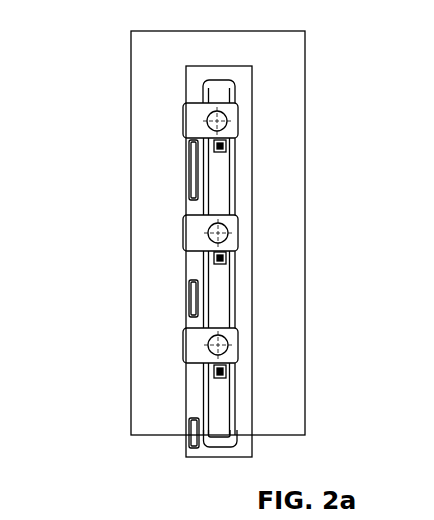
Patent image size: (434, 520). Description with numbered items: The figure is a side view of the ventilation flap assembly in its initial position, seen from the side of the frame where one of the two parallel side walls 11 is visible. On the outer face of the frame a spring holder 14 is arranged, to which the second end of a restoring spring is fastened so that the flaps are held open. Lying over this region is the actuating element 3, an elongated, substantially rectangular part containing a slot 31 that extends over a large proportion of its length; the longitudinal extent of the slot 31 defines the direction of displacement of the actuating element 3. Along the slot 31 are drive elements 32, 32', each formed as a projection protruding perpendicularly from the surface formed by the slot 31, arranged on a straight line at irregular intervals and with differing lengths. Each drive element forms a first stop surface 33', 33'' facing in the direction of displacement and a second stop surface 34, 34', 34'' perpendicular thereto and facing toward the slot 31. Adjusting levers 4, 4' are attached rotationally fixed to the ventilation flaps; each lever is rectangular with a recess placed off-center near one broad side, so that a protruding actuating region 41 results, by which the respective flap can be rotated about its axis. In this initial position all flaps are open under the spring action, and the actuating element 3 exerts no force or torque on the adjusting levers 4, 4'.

The side wall 11 is at (287, 192).
The spring holder 14 is at (187, 148).
The actuating element 3 is at (238, 95).
The adjusting lever 4 is at (280, 125).
The adjusting lever 4' is at (273, 195).
The actuating region 41 is at (195, 118).
The slot 31 is at (217, 423).
The drive element 32 is at (118, 178).
The drive element 32' is at (116, 270).
The first stop surface 33' is at (299, 289).
The first stop surface 33'' is at (282, 381).
The second stop surface 34 is at (119, 170).
The second stop surface 34' is at (117, 312).
The second stop surface 34'' is at (117, 404).